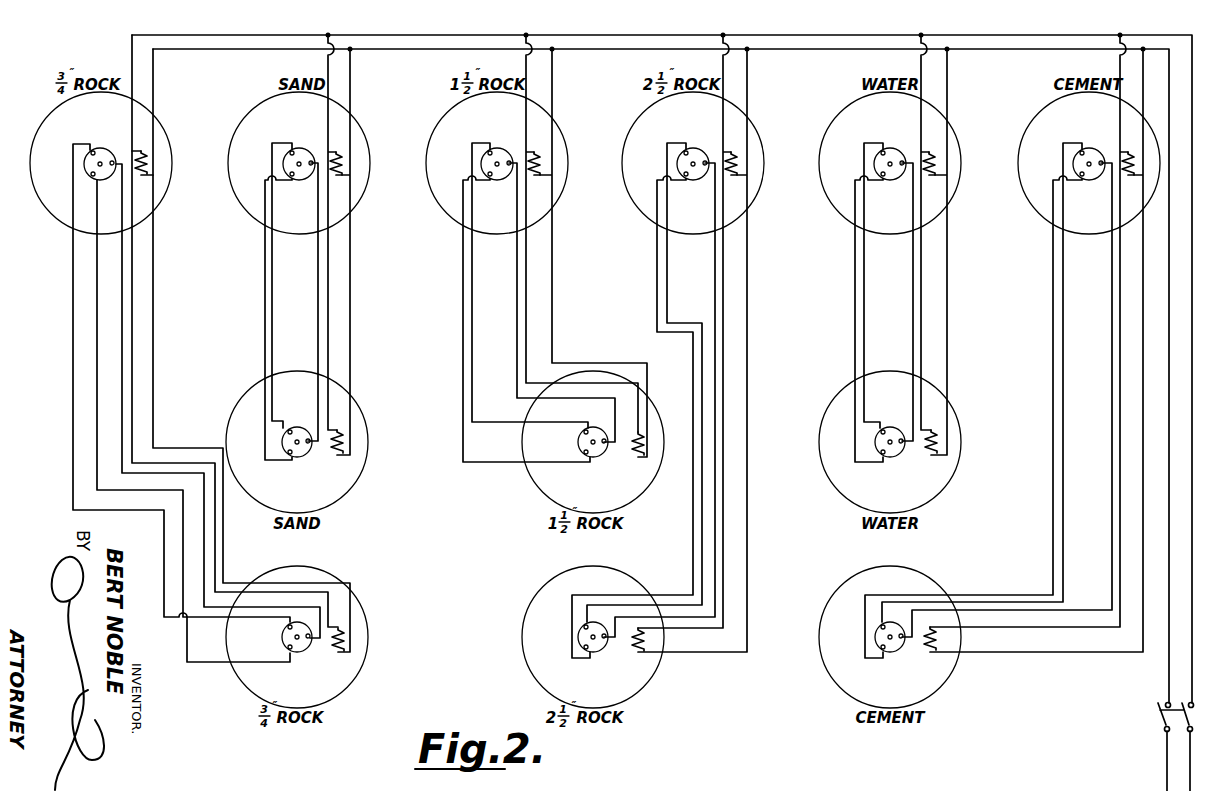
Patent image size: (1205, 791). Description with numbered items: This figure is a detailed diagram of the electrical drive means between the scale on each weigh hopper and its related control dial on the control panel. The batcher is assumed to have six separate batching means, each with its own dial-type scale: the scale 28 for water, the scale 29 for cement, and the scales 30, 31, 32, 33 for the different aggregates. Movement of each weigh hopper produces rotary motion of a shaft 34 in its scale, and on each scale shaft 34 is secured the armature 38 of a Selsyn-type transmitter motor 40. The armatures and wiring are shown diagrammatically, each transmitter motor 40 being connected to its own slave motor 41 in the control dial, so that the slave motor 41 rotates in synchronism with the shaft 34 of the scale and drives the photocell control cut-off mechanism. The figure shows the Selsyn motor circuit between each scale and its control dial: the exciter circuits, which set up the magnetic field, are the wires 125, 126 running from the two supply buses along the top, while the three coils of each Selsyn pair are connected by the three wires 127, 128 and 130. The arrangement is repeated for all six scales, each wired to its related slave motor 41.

The scale for water 28 is at (890, 163).
The scale for cement 29 is at (1089, 163).
The scale for aggregate 30 is at (693, 163).
The scale for aggregate 31 is at (497, 163).
The scale for aggregate 32 is at (101, 163).
The scale for aggregate 33 is at (299, 163).
The scale shaft 34 is at (88, 165).
The armature 38 is at (86, 157).
The transmitter motor 40 is at (103, 157).
The slave motor 41 is at (300, 428).
The exciter circuit 125 is at (132, 299).
The exciter circuit 126 is at (153, 319).
The wire 127 is at (122, 358).
The wire 128 is at (110, 380).
The wire 130 is at (73, 351).